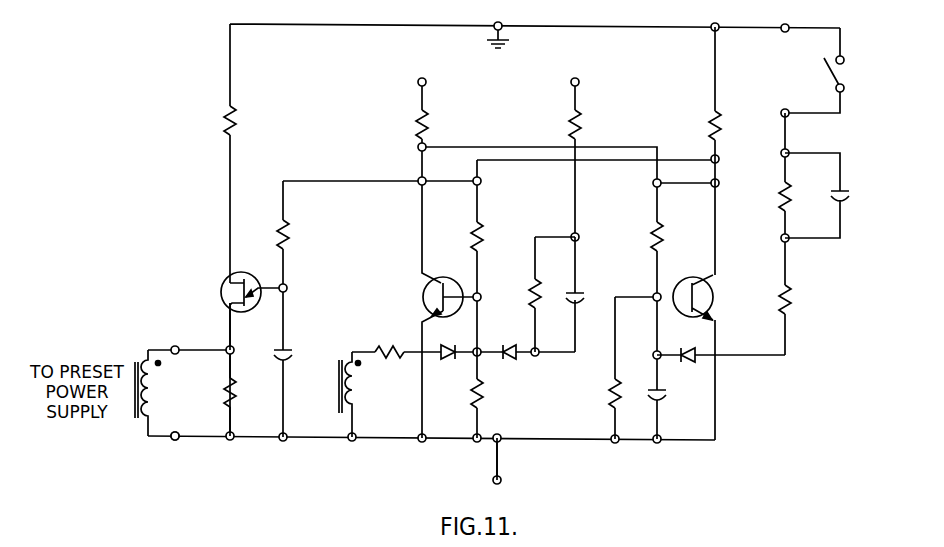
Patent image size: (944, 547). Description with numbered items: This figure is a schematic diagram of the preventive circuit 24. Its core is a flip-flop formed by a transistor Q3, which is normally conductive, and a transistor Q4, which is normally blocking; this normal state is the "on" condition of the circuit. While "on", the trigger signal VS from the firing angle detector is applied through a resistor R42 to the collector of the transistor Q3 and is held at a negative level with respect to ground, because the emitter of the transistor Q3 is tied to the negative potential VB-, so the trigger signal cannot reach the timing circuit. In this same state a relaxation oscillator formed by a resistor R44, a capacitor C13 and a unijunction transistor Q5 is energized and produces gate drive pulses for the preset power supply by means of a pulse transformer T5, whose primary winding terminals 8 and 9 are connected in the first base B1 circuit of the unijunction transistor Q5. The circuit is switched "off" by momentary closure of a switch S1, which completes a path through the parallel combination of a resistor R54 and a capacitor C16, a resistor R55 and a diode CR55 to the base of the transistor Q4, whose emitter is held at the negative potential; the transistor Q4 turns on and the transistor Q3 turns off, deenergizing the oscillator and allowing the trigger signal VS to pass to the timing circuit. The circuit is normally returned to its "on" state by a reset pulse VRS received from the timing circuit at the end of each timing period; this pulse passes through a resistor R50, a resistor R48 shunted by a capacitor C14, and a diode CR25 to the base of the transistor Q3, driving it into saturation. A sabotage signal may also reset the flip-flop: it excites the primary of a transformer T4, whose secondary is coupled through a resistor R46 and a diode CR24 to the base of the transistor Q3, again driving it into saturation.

The preventive circuit 24 is at (195, 257).
The primary winding terminal 9 is at (175, 341).
The primary winding terminal 8 is at (175, 449).
The pulse transformer T5 is at (139, 357).
The transformer T4 is at (342, 358).
The unijunction transistor Q5 is at (222, 290).
The transistor Q3 is at (426, 311).
The transistor Q4 is at (713, 306).
The first base B1 is at (233, 305).
The resistor R42 is at (414, 117).
The resistor R44 is at (290, 235).
The resistor R46 is at (393, 343).
The resistor R48 is at (531, 287).
The resistor R50 is at (568, 117).
The resistor R54 is at (780, 188).
The resistor R55 is at (778, 287).
The capacitor C13 is at (297, 354).
The capacitor C14 is at (584, 297).
The capacitor C16 is at (826, 197).
The diode CR24 is at (446, 340).
The diode CR25 is at (507, 340).
The diode CR55 is at (682, 350).
The switch S1 is at (851, 56).
The trigger signal VS is at (419, 83).
The reset pulse VRS is at (572, 83).
The negative supply potential VB- is at (499, 473).